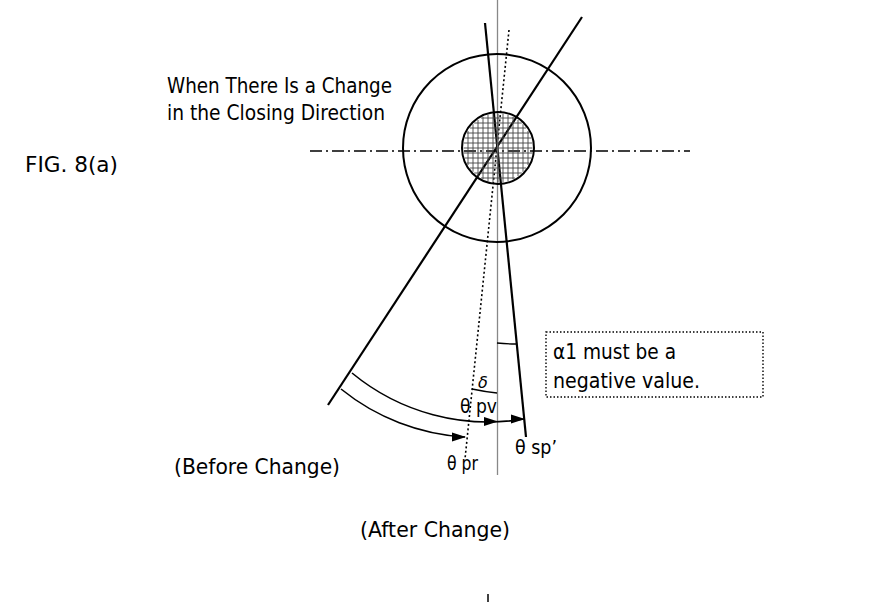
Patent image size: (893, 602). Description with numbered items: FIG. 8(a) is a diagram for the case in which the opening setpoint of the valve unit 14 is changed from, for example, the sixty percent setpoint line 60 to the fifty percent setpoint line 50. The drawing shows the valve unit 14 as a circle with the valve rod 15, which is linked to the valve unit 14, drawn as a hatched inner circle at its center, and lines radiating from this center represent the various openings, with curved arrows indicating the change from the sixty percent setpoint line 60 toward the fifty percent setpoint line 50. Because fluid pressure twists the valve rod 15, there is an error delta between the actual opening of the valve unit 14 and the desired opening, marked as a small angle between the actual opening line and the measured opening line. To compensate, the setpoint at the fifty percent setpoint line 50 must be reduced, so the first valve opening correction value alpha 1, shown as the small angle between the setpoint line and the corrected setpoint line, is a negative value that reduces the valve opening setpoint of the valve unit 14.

The valve unit 14 is at (572, 127).
The valve rod 15 is at (478, 118).
The valve opening set point 60% line 60 is at (439, 235).
The valve opening set point 50% line 50 is at (499, 257).
The angle alpha 1 is at (507, 356).